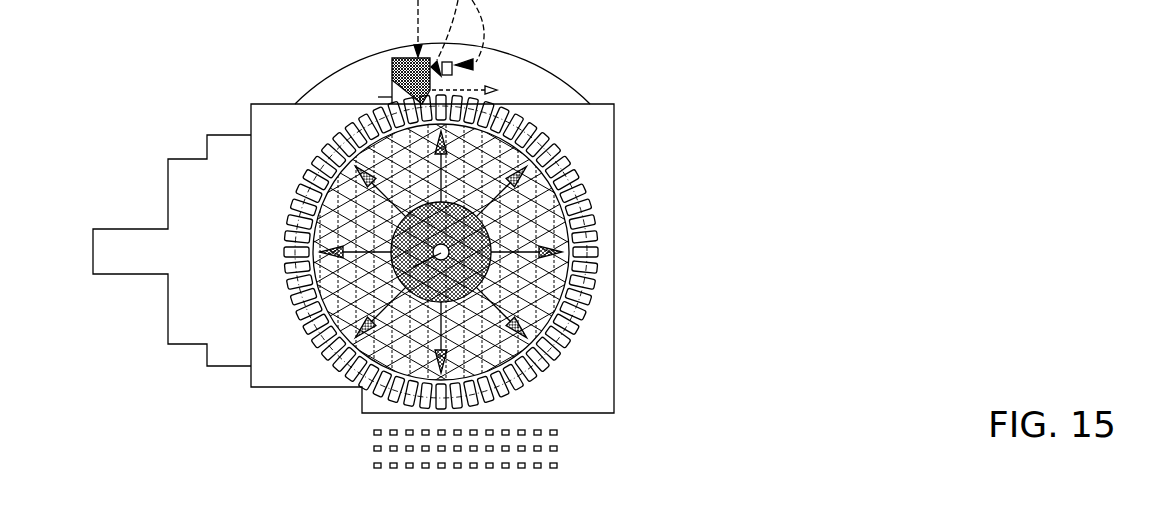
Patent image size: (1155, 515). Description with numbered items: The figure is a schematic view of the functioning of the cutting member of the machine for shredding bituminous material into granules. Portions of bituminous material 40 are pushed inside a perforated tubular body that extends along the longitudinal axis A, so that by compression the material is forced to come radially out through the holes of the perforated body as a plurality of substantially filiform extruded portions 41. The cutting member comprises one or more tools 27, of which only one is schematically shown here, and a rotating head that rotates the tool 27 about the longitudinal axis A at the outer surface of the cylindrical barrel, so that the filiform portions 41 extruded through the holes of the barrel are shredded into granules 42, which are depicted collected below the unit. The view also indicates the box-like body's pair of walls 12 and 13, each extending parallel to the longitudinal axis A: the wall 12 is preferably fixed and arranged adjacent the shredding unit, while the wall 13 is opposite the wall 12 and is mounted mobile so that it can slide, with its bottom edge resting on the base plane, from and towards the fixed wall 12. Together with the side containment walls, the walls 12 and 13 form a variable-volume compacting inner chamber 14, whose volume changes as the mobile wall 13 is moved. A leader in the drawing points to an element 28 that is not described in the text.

The wall 12 is at (595, 132).
The wall 13 is at (273, 122).
The variable-volume compacting inner chamber 14 is at (339, 368).
The tool 27 is at (390, 98).
The cover 28 is at (527, 72).
The portions of bituminous material 40 is at (578, 181).
The filiform extruded portions 41 is at (578, 310).
The granules 42 is at (560, 446).
The longitudinal axis A is at (335, 330).